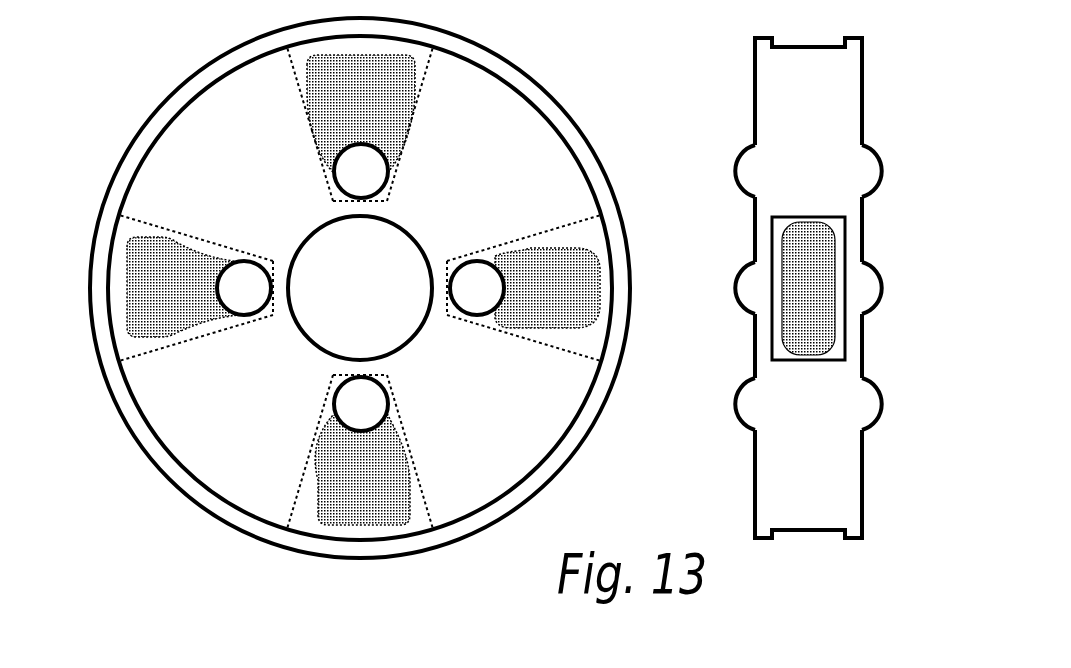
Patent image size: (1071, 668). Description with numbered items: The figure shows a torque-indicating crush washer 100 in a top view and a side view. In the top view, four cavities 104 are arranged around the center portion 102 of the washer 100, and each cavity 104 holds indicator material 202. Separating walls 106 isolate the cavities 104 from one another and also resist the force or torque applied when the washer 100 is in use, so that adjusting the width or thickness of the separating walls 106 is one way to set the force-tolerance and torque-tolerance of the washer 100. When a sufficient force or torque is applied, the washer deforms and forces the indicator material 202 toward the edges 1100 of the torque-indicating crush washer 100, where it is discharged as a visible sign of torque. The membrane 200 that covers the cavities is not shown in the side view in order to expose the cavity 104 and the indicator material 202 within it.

The torque-indicating crush washer 100 is at (666, 50).
The center portion 102 is at (753, 260).
The cavities 104 is at (299, 87).
The separating walls 106 is at (583, 440).
The membrane 200 is at (163, 477).
The indicator material 202 is at (375, 111).
The edges 1100 is at (864, 57).